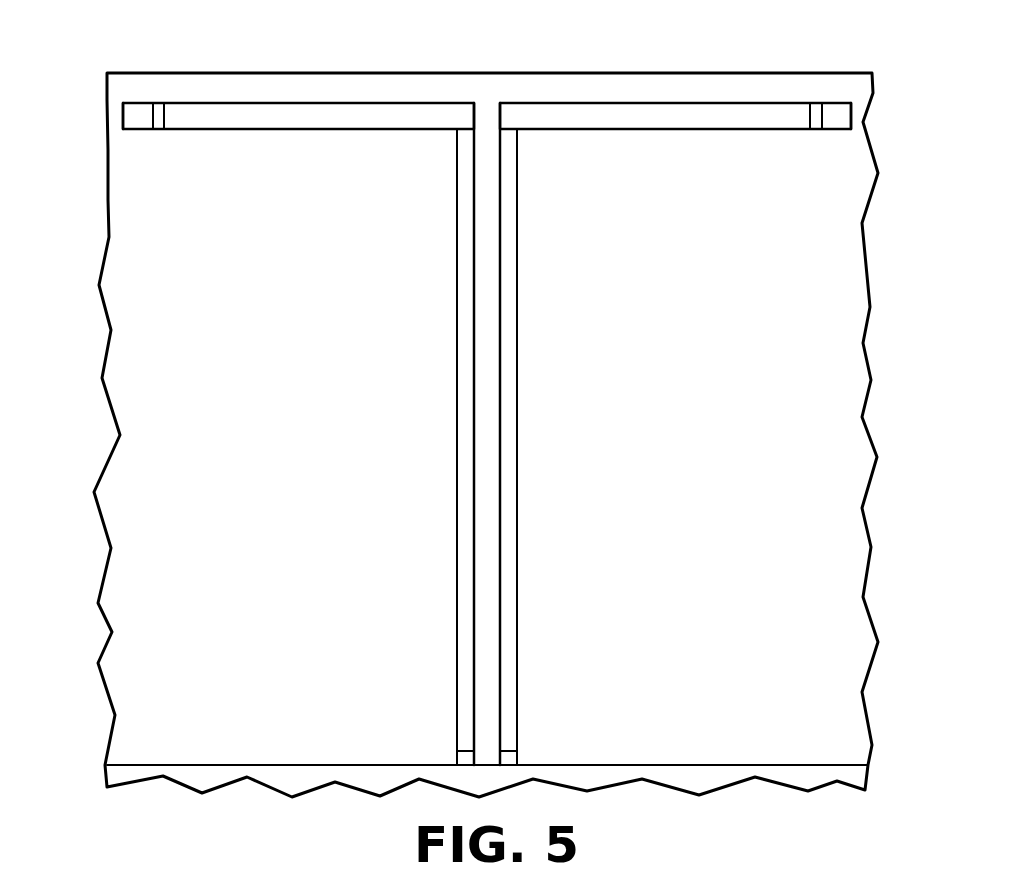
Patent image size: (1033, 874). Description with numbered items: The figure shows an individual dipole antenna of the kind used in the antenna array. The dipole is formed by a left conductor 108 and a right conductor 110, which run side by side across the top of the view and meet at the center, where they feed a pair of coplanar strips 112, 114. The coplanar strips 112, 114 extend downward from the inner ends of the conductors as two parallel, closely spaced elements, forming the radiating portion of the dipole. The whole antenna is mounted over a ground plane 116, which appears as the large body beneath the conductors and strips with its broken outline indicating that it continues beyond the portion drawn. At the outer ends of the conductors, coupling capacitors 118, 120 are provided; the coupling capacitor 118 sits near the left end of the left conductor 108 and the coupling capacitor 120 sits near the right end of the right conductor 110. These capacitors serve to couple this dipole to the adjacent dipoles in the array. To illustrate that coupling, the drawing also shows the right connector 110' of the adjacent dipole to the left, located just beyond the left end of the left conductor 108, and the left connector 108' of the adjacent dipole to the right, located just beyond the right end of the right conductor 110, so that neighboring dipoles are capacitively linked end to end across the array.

The left conductor 108 is at (298, 81).
The left connector of an adjacent dipole 108' is at (899, 116).
The right conductor 110 is at (675, 81).
The right connector of an adjacent dipole 110' is at (78, 116).
The coplanar strip 112 is at (455, 449).
The coplanar strip 114 is at (520, 448).
The ground plane 116 is at (272, 765).
The coupling capacitor 118 is at (161, 102).
The coupling capacitor 120 is at (817, 102).